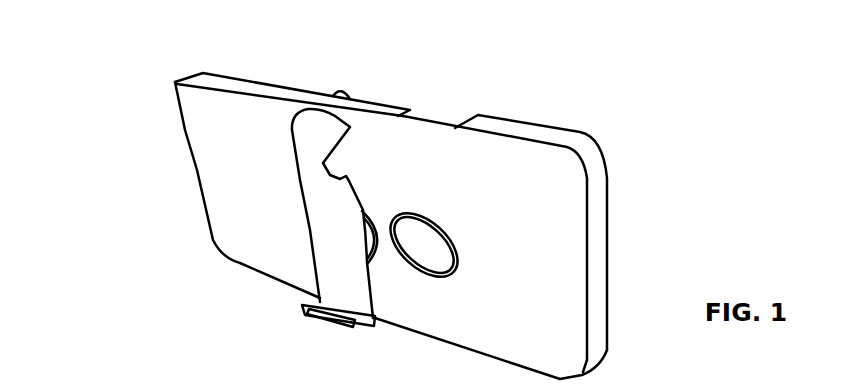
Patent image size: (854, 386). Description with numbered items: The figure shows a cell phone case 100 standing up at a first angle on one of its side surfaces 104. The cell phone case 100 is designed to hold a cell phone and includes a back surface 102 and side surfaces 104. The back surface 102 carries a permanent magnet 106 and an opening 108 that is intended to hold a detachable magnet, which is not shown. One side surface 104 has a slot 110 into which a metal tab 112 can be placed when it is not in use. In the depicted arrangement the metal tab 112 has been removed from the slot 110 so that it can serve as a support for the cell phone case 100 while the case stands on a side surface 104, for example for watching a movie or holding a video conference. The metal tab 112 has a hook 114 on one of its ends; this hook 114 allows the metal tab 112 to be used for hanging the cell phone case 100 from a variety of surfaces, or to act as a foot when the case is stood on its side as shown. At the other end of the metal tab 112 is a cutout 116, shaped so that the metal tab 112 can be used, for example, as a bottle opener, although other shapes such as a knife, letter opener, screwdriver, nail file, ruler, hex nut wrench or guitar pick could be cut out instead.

The cell phone case 100 is at (130, 70).
The slot 110 is at (441, 103).
The back surface 102 is at (215, 198).
The side surfaces 104 is at (573, 138).
The permanent magnet 106 is at (365, 206).
The opening 108 is at (432, 232).
The metal tab 112 is at (325, 212).
The hook 114 is at (340, 323).
The cutout 116 is at (330, 113).